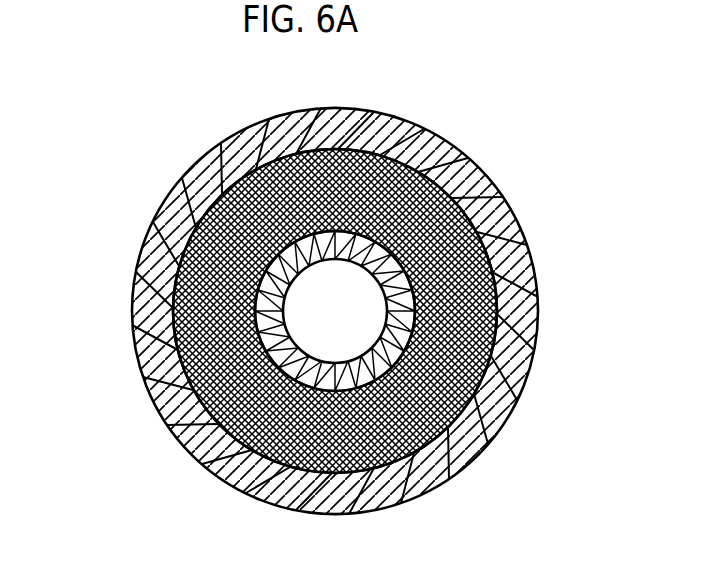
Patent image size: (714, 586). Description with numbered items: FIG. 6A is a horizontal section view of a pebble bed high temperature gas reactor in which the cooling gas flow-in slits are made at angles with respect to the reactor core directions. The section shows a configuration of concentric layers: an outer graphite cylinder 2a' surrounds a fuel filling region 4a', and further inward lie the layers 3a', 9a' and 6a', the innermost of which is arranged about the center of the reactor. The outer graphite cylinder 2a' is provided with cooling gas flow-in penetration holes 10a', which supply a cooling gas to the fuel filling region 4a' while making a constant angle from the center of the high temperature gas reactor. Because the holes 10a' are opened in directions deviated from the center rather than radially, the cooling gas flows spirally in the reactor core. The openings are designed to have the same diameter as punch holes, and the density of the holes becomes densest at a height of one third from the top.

The outer graphite cylinder 2a' is at (384, 311).
The outer hatched layer 9a' is at (384, 311).
The fuel filling region 4a' is at (403, 311).
The layer boundary 3a' is at (403, 311).
The cooling gas flow-in penetration holes 10a' is at (454, 311).
The core 6a' is at (205, 311).